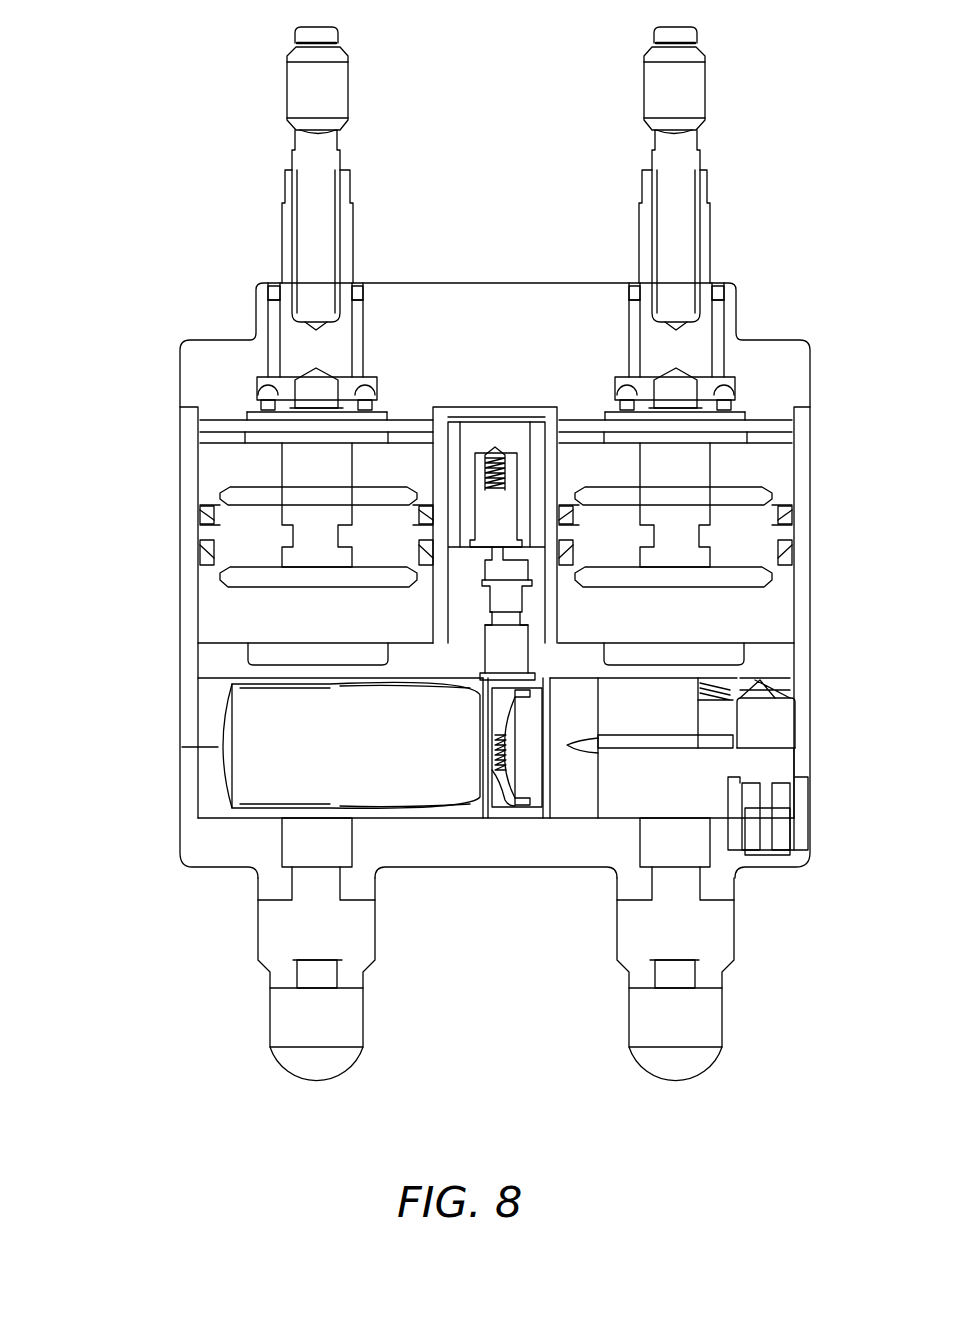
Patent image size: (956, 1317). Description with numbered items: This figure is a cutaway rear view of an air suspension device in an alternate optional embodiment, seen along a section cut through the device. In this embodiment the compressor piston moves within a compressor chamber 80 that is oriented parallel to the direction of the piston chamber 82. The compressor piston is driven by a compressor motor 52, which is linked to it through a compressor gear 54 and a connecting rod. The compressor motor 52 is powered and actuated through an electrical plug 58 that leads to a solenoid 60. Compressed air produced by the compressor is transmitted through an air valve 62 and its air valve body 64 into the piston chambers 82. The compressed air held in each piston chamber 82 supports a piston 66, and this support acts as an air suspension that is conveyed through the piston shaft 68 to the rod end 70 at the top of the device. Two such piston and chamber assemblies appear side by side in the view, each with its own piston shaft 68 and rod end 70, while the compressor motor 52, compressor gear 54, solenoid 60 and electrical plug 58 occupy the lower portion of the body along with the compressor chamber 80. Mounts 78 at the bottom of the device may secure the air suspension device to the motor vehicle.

The compressor motor 52 is at (267, 795).
The compressor gear 54 is at (532, 790).
The electrical plug 58 is at (773, 775).
The solenoid 60 is at (702, 720).
The air valve 62 is at (498, 523).
The air valve body 64 is at (503, 435).
The piston 66 is at (237, 515).
The piston shaft 68 is at (282, 222).
The rod end 70 is at (287, 62).
The mount 78 is at (299, 1062).
The compressor chamber 80 is at (493, 652).
The piston chamber 82 is at (198, 467).